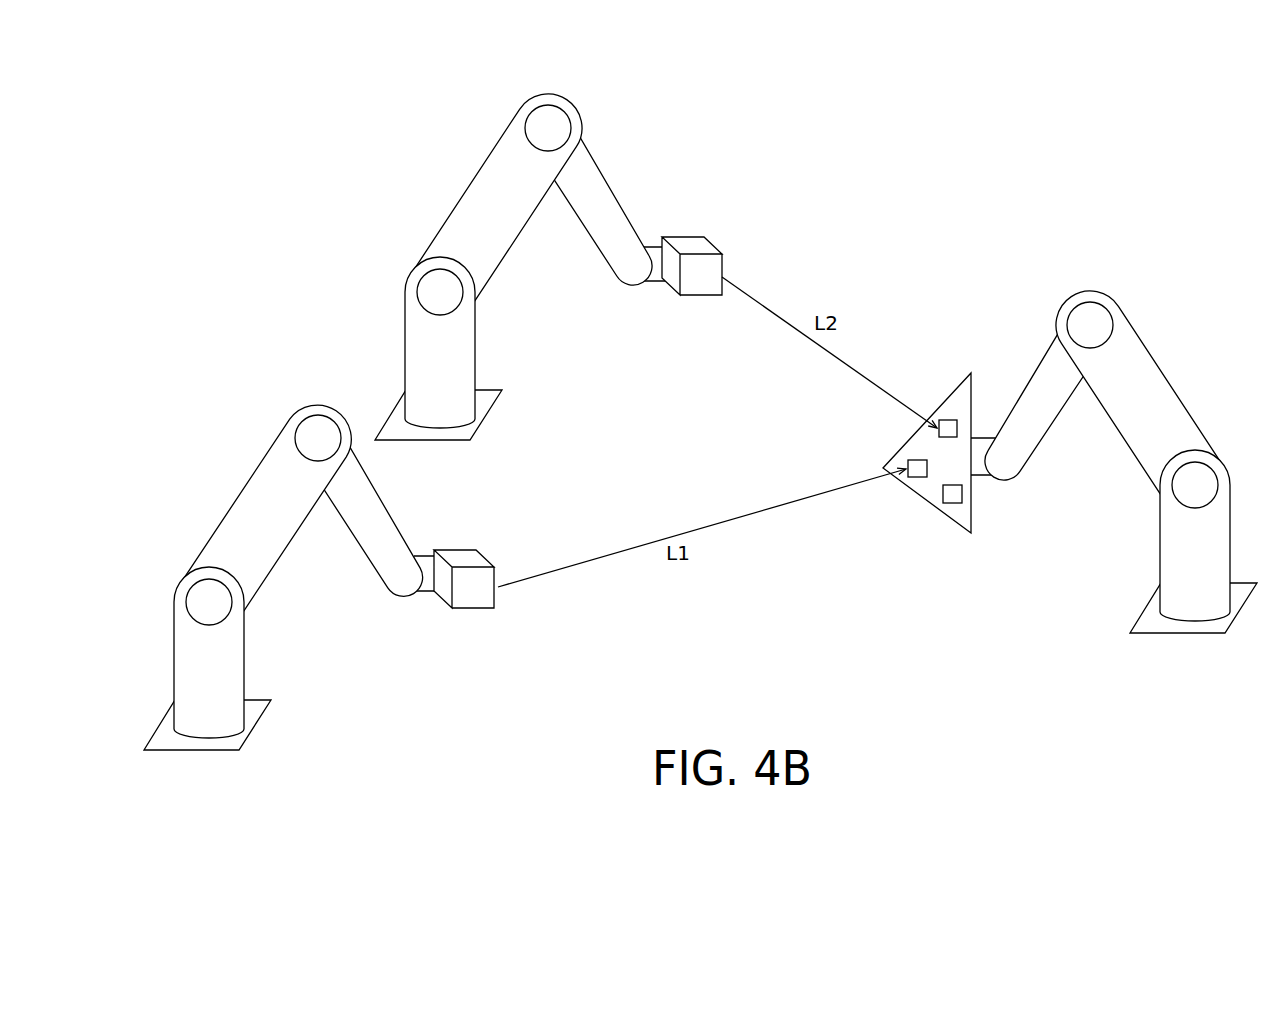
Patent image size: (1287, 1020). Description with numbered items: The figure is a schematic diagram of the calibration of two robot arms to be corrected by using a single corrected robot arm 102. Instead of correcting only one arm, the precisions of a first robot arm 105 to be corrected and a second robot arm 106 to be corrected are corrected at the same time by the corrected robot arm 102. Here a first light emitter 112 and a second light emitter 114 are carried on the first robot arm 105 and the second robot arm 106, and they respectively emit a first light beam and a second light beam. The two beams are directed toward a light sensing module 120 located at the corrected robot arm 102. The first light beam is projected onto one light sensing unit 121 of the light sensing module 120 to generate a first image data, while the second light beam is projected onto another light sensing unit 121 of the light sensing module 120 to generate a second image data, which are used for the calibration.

The corrected robot arm 102 is at (1208, 325).
The first robot arm to be corrected 105 is at (319, 565).
The second robot arm to be corrected 106 is at (548, 262).
The first light emitter 112 is at (458, 547).
The second light emitter 114 is at (683, 237).
The light sensing module 120 is at (968, 357).
The light sensing unit 121 is at (948, 418).